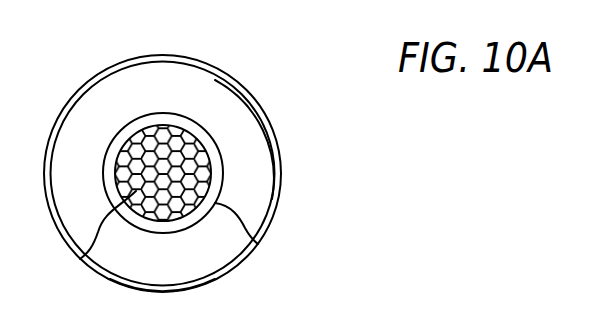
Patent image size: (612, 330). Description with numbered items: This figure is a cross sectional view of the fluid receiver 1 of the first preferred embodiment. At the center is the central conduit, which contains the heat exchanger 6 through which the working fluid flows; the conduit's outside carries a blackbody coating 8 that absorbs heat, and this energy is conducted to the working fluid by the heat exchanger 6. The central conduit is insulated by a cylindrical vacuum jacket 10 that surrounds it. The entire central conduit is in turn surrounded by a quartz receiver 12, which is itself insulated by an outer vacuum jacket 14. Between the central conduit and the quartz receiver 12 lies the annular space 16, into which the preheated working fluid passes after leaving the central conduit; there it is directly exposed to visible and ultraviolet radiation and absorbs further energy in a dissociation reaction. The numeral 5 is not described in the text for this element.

The fluid receiver 1 is at (287, 60).
The outer jacket 5 is at (173, 55).
The heat exchanger 6 is at (80, 259).
The blackbody coating 8 is at (199, 132).
The cylindrical vacuum jacket 10 is at (258, 244).
The quartz receiver 12 is at (206, 283).
The outer vacuum jacket 14 is at (122, 285).
The annular space 16 is at (251, 142).